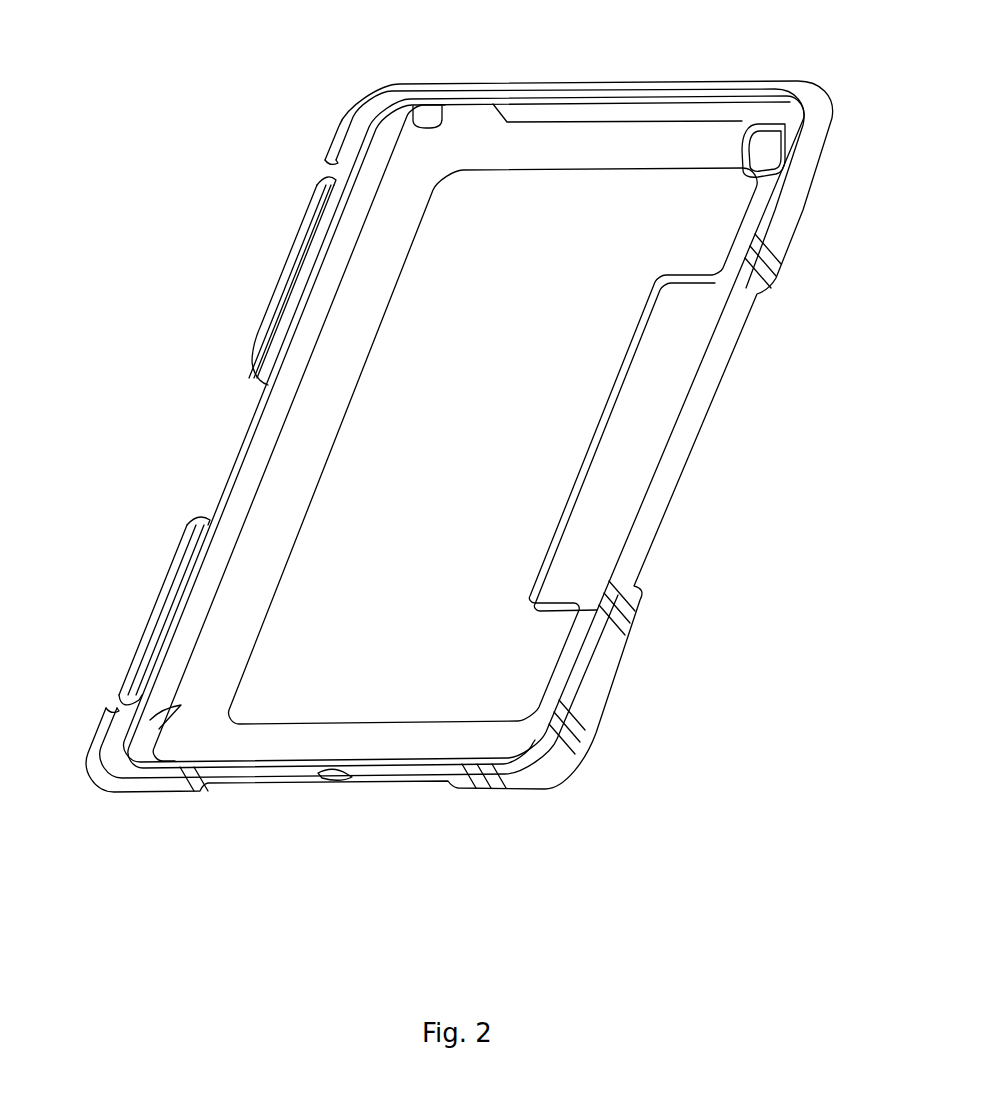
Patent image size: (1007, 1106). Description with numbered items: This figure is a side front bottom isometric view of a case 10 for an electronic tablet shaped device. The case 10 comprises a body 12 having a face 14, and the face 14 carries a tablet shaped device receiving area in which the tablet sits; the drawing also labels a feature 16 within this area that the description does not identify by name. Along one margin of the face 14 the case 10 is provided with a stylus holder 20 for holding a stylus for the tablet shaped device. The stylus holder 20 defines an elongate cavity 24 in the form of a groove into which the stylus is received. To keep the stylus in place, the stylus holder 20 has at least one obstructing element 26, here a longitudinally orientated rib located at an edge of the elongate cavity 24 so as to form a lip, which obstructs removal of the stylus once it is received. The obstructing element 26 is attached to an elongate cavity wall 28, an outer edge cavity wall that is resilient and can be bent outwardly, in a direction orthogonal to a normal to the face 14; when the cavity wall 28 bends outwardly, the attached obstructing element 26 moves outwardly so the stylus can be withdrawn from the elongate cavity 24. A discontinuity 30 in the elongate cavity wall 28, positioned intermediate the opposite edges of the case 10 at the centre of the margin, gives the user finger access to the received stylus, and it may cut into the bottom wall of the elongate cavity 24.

The case 10 is at (100, 63).
The body 12 is at (766, 88).
The face 14 is at (660, 197).
The window opening 16 is at (627, 190).
The stylus holder 20 is at (192, 429).
The elongate cavity 24 is at (330, 196).
The obstructing element 26 is at (286, 283).
The elongate cavity wall 28 is at (270, 320).
The discontinuity 30 is at (229, 431).